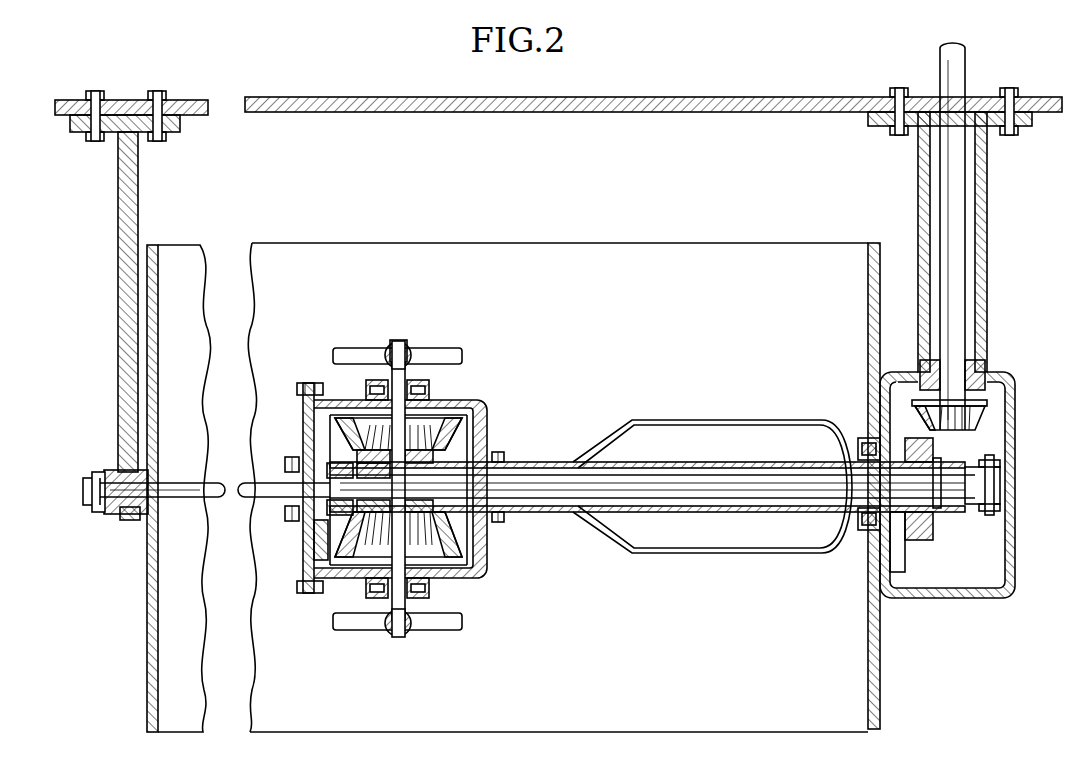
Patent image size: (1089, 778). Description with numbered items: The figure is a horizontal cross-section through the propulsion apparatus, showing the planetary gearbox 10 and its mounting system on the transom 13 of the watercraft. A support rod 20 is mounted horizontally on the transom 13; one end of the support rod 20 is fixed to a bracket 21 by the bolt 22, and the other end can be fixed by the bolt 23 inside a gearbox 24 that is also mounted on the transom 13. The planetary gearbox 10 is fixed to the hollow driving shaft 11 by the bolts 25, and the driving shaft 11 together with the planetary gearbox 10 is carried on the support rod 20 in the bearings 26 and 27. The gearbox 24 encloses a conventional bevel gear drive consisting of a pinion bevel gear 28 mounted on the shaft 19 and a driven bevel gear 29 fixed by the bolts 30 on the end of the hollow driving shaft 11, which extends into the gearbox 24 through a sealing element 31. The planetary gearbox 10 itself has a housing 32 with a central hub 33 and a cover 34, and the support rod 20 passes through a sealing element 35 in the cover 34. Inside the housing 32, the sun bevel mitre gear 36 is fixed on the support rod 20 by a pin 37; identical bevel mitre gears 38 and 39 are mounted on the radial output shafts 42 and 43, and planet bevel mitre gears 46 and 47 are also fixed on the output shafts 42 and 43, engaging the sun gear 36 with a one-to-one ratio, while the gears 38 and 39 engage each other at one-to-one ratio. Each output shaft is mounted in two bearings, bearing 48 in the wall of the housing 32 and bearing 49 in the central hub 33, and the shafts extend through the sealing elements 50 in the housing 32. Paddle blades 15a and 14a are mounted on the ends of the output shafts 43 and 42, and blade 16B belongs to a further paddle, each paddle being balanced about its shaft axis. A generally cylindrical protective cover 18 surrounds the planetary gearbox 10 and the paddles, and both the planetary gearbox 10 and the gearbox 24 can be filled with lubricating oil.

The planetary gearbox 10 is at (494, 600).
The driving shaft 11 is at (692, 500).
The transom 13 is at (622, 98).
The blade 14a is at (440, 632).
The blade 15a is at (388, 358).
The blade 16B is at (762, 553).
The protective cover 18 is at (150, 592).
The shaft 19 is at (942, 68).
The support rod 20 is at (186, 498).
The bracket 21 is at (125, 345).
The bolt 22 is at (100, 476).
The bolt 23 is at (995, 465).
The gearbox 24 is at (1012, 552).
The bolts 25 is at (500, 518).
The bearing 26 is at (320, 420).
The bearing 27 is at (940, 500).
The pinion bevel gear 28 is at (975, 418).
The driven bevel gear 29 is at (905, 560).
The bolts 30 is at (890, 565).
The sealing element 31 is at (860, 530).
The housing 32 is at (478, 582).
The central hub 33 is at (480, 458).
The cover 34 is at (305, 590).
The sealing element 35 is at (290, 508).
The sun bevel mitre gear 36 is at (308, 560).
The pin 37 is at (332, 465).
The bevel mitre gear 38 is at (470, 545).
The bevel mitre gear 39 is at (455, 432).
The radial output shaft 42 is at (396, 635).
The radial output shaft 43 is at (430, 358).
The planet bevel mitre gear 46 is at (470, 572).
The planet bevel mitre gear 47 is at (475, 400).
The bearing 48 is at (385, 392).
The bearing 49 is at (365, 390).
The sealing elements 50 is at (425, 372).